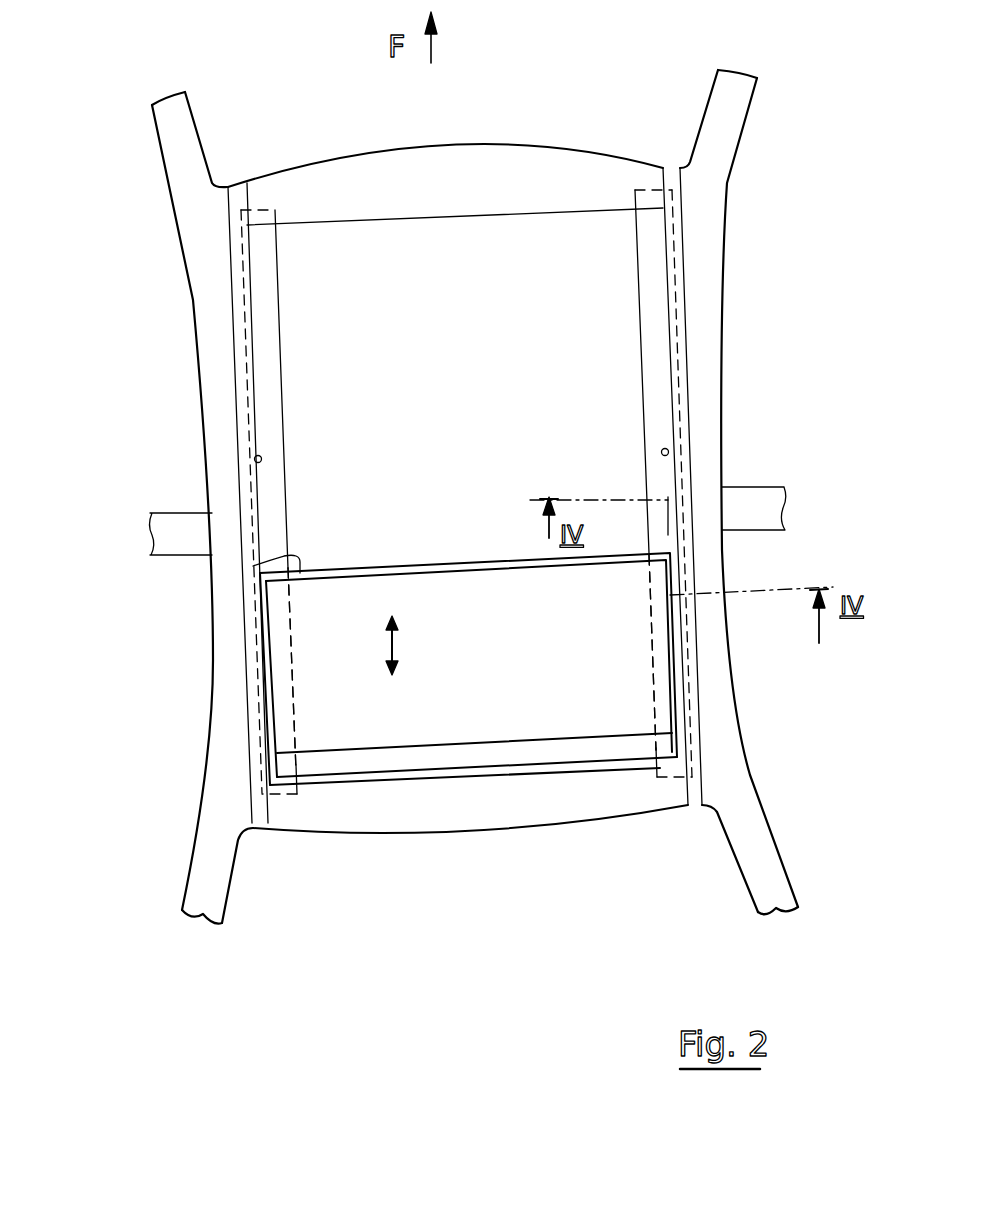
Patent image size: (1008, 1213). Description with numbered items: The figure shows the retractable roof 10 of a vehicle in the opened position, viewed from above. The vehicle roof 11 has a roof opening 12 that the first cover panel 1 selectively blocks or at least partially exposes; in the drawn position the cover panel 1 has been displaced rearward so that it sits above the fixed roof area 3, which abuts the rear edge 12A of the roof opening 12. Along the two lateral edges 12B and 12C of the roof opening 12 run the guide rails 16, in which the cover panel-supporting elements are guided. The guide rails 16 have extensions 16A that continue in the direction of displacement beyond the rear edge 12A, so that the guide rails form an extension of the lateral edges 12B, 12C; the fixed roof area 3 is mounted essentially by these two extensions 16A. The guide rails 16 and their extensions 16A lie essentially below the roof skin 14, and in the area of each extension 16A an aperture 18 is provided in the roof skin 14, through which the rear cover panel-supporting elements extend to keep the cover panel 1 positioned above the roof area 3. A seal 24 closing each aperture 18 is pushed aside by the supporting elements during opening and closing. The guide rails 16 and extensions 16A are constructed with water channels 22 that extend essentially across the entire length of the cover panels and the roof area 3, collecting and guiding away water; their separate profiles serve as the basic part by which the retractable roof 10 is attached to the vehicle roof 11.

The first cover panel 1 is at (468, 669).
The fixed roof area 3 is at (473, 760).
The retractable roof 10 is at (693, 342).
The vehicle roof 11 is at (527, 157).
The roof opening 12 is at (468, 441).
The rear edge of the roof opening 12A is at (253, 566).
The lateral edge of the roof opening 12B is at (254, 460).
The lateral edge of the roof opening 12C is at (668, 452).
The roof skin 14 is at (297, 193).
The guide rails 16 is at (246, 400).
The extensions of the guide rails 16A is at (258, 677).
The aperture 18 is at (677, 683).
The water channels 22 is at (274, 297).
The seal 24 is at (267, 732).